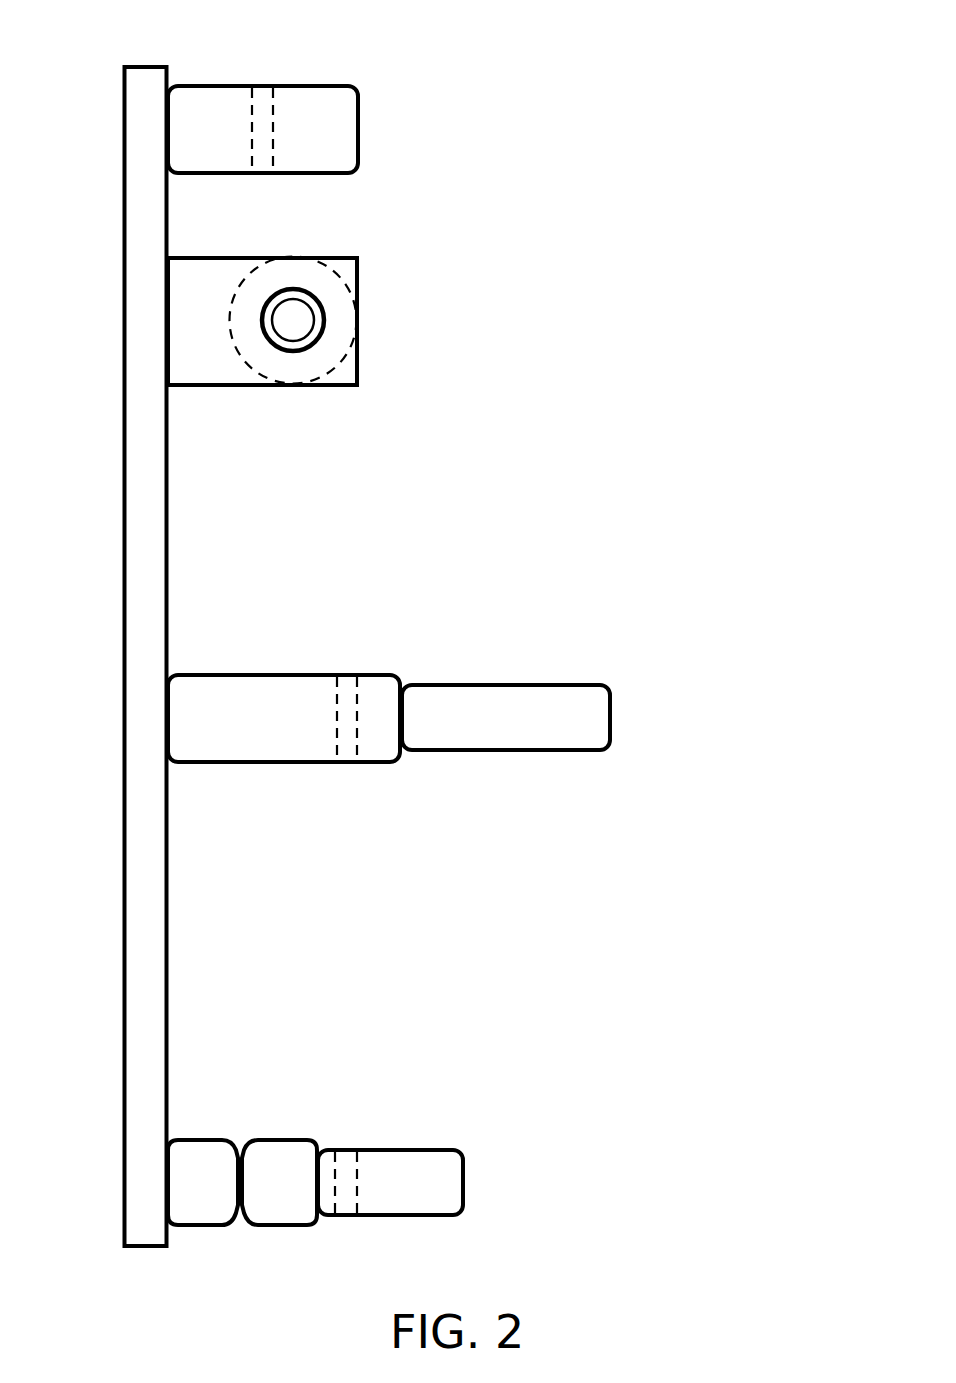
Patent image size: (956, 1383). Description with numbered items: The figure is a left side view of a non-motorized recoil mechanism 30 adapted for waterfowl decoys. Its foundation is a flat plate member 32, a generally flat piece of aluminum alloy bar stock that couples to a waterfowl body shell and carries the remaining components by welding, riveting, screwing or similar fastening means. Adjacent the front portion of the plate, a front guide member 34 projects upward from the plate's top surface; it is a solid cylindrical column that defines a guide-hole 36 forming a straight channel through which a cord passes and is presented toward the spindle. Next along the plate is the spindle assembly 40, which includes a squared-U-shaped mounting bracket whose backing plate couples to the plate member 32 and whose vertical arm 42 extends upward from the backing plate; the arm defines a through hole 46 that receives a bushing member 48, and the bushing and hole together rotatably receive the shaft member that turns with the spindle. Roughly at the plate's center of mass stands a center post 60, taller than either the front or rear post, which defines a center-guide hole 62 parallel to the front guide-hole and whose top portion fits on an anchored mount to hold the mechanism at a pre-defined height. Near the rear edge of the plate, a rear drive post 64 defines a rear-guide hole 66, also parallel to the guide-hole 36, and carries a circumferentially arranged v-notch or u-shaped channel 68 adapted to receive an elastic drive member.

The non-motorized recoil mechanism 30 is at (702, 1168).
The flat plate member 32 is at (143, 213).
The front guide member 34 is at (338, 123).
The guide-hole 36 is at (262, 70).
The spindle assembly 40 is at (425, 312).
The vertical arm 42 is at (205, 372).
The through hole 46 is at (324, 343).
The bushing member 48 is at (308, 297).
The center post 60 is at (537, 735).
The center-guide hole 62 is at (355, 648).
The rear drive post 64 is at (432, 1173).
The rear-guide hole 66 is at (347, 1120).
The u-shaped channel 68 is at (236, 1117).